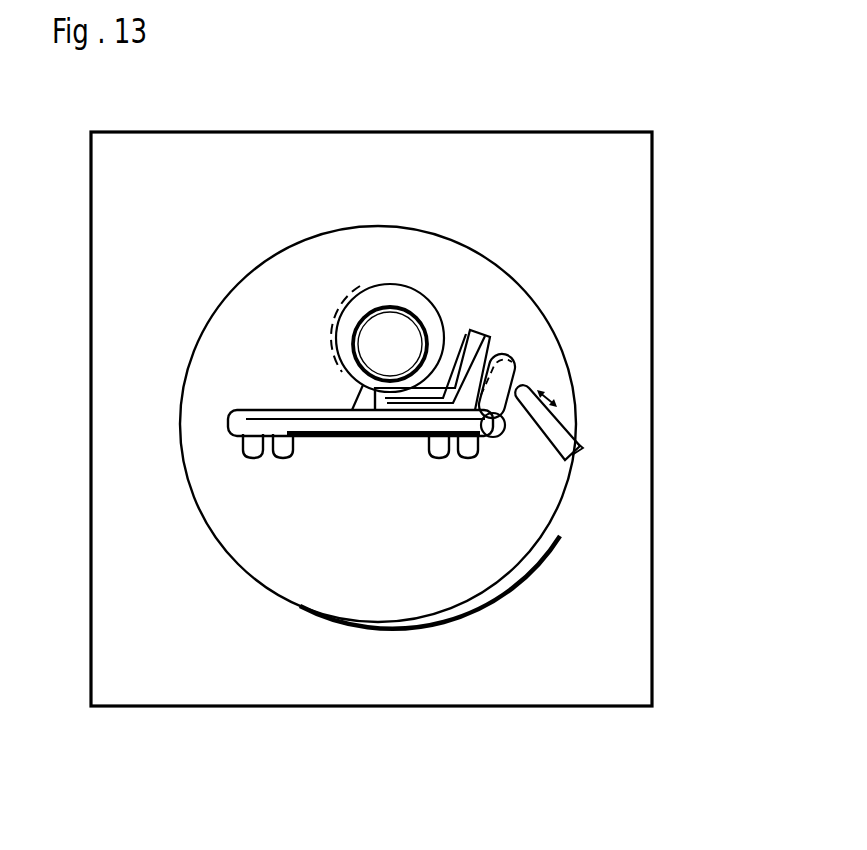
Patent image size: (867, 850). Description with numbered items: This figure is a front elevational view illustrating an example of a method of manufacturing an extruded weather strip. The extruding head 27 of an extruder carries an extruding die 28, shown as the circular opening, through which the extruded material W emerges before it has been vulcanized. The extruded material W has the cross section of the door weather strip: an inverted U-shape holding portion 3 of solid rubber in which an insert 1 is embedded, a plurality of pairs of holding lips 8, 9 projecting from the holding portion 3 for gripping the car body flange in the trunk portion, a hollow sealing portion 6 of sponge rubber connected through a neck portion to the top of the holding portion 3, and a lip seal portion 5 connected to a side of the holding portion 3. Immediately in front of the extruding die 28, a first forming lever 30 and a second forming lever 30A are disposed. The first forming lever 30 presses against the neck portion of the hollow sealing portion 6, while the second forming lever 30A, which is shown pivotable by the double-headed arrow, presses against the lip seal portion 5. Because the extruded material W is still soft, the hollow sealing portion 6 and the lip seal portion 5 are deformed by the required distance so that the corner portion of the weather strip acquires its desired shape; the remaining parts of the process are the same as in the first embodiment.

The extruding head 27 is at (633, 258).
The extruding die 28 is at (518, 514).
The extruded material W is at (290, 408).
The insert 1 is at (482, 440).
The inverted U-shape holding portion 3 is at (361, 428).
The holding lip 8 is at (291, 450).
The holding lip 9 is at (262, 458).
The hollow sealing portion 6 is at (432, 310).
The first forming lever 30 is at (469, 332).
The lip seal portion 5 is at (507, 366).
The second forming lever 30A is at (557, 425).